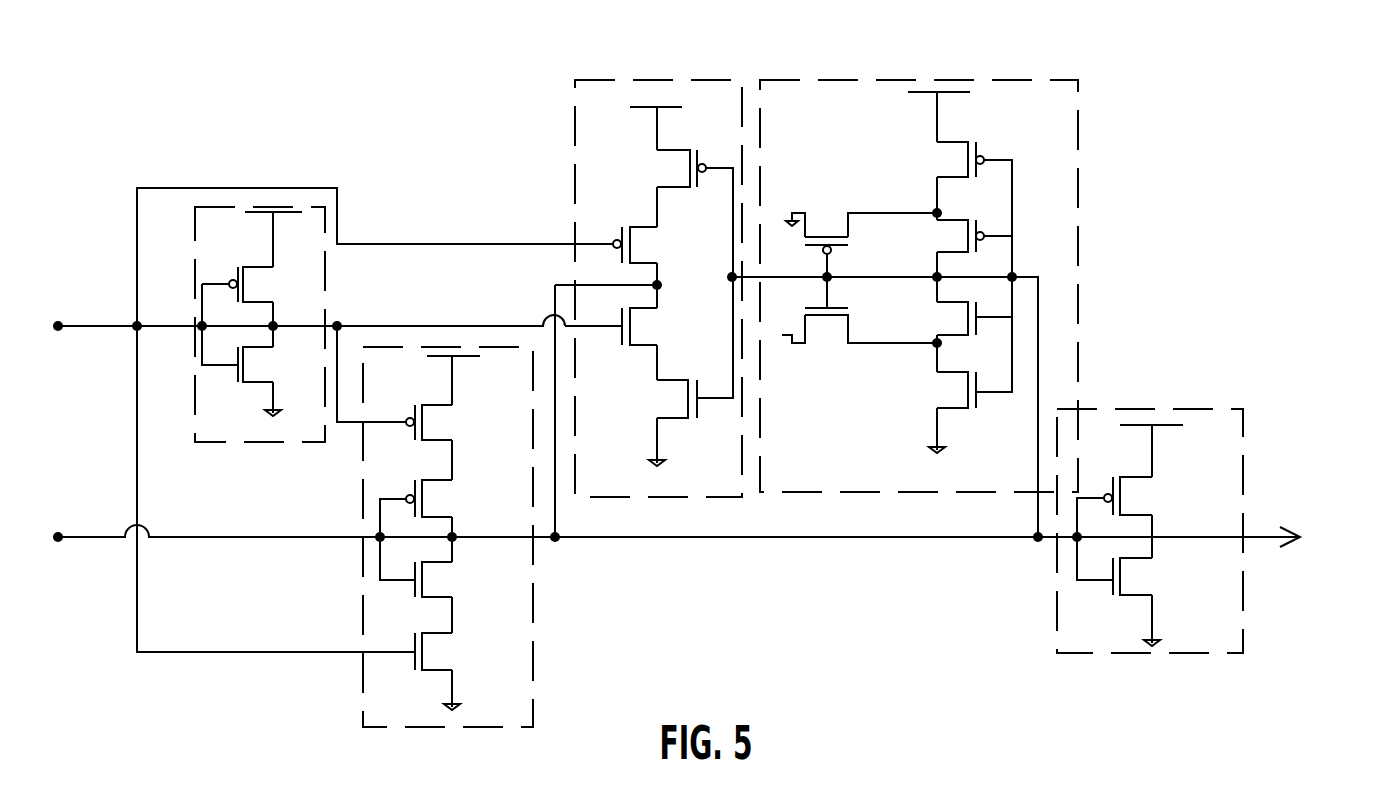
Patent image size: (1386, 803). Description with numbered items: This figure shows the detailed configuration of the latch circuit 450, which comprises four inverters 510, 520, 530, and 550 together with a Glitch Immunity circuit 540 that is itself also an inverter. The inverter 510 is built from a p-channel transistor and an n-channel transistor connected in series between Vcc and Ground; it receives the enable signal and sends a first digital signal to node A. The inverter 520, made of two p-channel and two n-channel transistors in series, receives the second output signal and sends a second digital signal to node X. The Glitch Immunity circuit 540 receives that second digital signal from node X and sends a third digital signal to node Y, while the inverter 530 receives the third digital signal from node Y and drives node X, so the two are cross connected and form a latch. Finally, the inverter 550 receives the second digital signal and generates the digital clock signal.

The latch circuit 450 is at (298, 100).
The inverter 510 is at (230, 207).
The inverter 520 is at (400, 347).
The inverter 530 is at (575, 97).
The Glitch Immunity circuit 540 is at (1080, 122).
The inverter 550 is at (1183, 409).